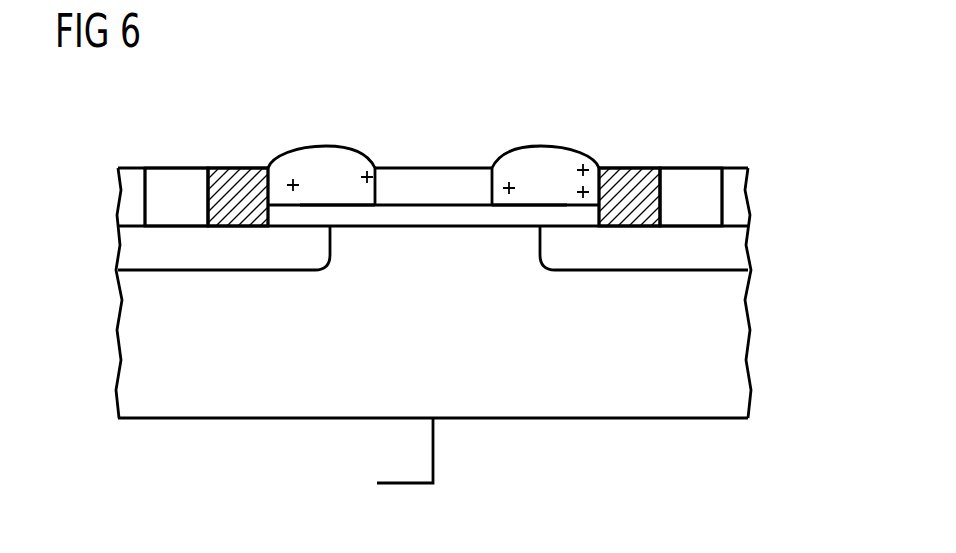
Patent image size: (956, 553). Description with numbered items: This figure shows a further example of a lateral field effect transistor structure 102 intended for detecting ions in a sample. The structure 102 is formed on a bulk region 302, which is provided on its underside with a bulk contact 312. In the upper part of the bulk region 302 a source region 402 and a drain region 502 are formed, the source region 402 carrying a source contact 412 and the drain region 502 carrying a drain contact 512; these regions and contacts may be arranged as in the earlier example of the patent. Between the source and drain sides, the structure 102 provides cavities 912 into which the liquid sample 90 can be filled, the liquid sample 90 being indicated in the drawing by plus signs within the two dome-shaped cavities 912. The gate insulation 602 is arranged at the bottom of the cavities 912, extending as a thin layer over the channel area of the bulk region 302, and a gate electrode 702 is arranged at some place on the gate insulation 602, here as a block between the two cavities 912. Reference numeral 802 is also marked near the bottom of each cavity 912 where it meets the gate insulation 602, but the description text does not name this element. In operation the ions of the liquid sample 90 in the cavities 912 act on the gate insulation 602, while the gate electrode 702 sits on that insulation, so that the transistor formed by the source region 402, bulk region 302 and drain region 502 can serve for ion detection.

The lateral field effect transistor structure 102 is at (707, 78).
The bulk region 302 is at (737, 342).
The bulk contact 312 is at (434, 450).
The source region 402 is at (129, 252).
The drain region 502 is at (738, 258).
The source contact 412 is at (176, 164).
The drain contact 512 is at (691, 166).
The gate insulation 602 is at (422, 216).
The gate electrode 702 is at (433, 166).
The charge region 802 is at (330, 206).
The liquid sample 90 is at (287, 157).
The cavities 912 is at (319, 148).